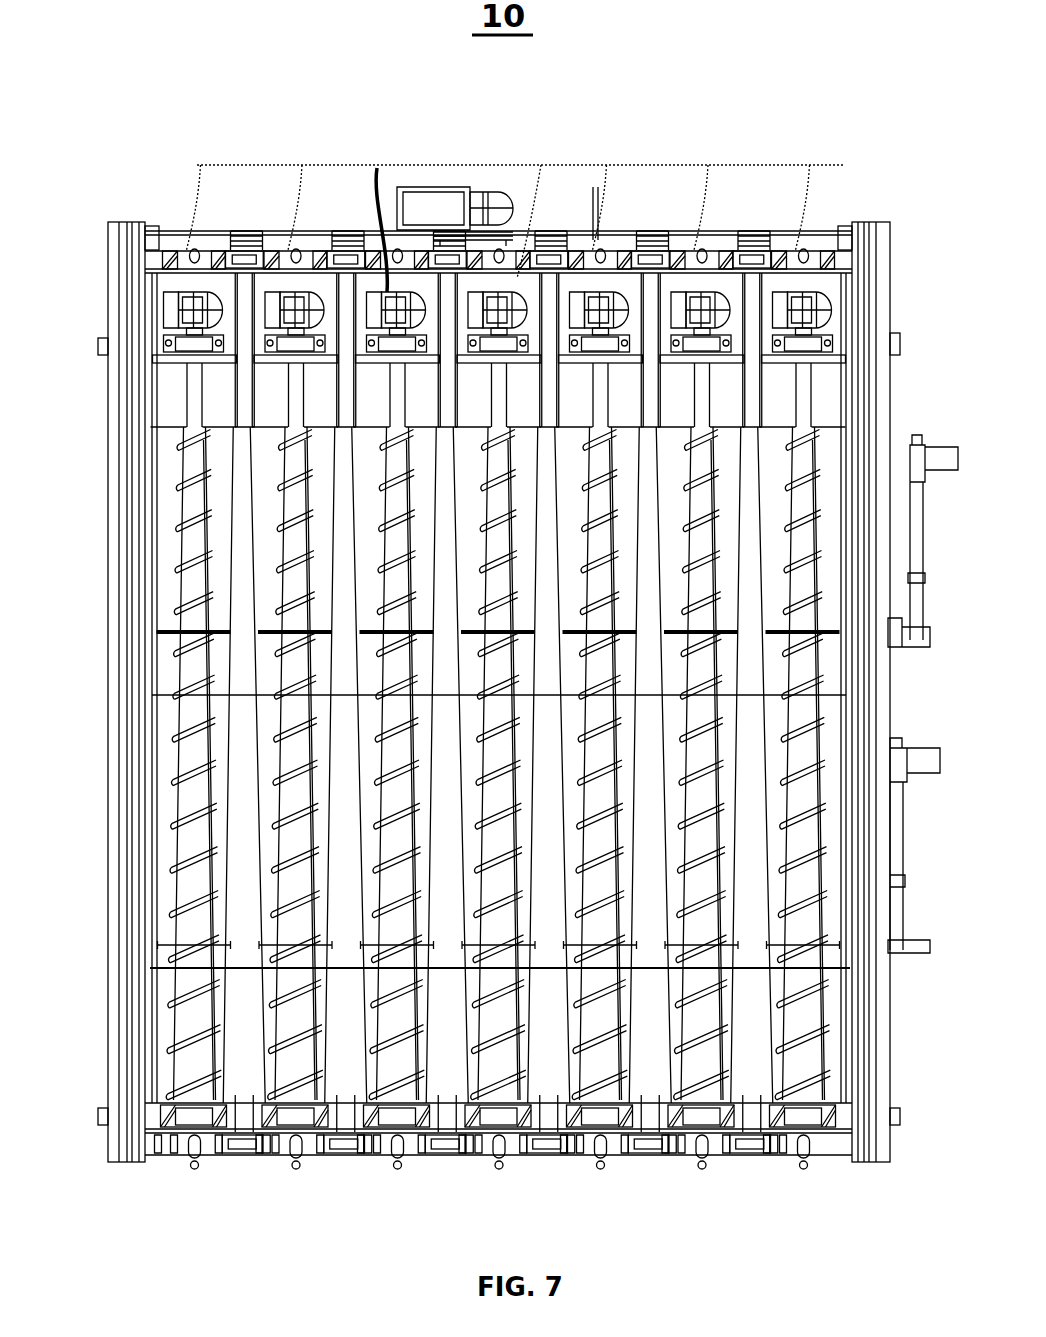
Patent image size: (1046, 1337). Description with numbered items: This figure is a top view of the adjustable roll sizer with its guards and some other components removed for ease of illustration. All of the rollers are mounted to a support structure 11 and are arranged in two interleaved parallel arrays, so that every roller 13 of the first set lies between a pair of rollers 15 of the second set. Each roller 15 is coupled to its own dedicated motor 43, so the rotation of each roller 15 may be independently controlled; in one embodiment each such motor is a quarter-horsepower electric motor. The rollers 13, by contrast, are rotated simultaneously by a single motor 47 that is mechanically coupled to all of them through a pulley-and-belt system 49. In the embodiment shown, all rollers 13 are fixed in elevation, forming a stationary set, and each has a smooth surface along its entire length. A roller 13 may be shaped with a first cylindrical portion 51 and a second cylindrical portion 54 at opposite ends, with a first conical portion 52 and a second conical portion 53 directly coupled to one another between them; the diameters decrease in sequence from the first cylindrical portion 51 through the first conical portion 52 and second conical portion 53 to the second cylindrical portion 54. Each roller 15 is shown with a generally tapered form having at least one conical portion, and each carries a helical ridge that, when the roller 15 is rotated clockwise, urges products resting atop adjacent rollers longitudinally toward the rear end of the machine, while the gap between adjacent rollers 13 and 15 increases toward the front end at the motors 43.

The support structure 11 is at (106, 520).
The roller 13 is at (236, 447).
The roller 15 is at (183, 467).
The motor 43 is at (539, 220).
The motor 47 is at (493, 183).
The pulley-and-belt system 49 is at (254, 220).
The first cylindrical portion 51 is at (245, 983).
The first conical portion 52 is at (245, 705).
The second conical portion 53 is at (265, 514).
The second cylindrical portion 54 is at (265, 421).